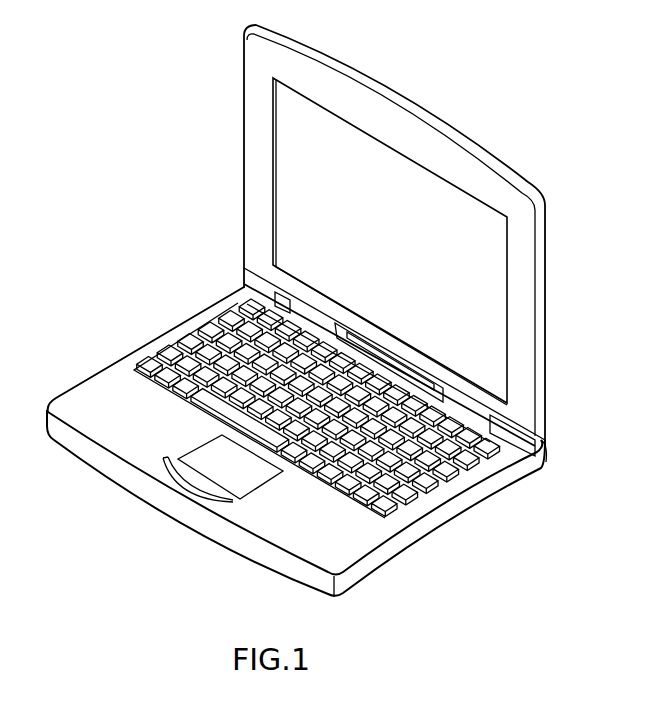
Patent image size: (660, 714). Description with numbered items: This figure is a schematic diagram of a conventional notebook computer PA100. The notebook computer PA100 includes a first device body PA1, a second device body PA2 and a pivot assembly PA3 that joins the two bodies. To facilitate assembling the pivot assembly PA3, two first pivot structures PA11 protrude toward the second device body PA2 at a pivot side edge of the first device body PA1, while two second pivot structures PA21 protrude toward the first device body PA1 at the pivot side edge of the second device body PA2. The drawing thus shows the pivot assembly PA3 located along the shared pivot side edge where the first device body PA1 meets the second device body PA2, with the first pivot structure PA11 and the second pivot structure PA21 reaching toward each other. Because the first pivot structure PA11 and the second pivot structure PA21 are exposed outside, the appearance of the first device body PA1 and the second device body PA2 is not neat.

The notebook computer PA100 is at (108, 140).
The first device body PA1 is at (447, 522).
The first pivot structure PA11 is at (546, 442).
The second device body PA2 is at (254, 180).
The second pivot structure PA21 is at (318, 313).
The pivot assembly PA3 is at (400, 353).